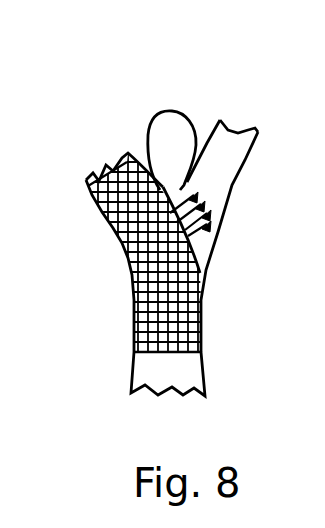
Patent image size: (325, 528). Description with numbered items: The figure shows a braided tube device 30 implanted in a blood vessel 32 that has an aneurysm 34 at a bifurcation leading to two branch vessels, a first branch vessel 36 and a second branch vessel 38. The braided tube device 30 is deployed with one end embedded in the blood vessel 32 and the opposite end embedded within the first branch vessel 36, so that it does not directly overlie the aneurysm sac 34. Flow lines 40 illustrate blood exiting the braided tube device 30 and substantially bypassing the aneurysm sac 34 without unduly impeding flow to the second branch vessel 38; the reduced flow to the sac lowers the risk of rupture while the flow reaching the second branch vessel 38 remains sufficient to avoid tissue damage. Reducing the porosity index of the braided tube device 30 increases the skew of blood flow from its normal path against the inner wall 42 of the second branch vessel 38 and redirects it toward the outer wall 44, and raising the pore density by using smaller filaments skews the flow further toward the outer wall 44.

The braided tube device 30 is at (132, 290).
The blood vessel 32 is at (203, 368).
The aneurysm 34 is at (168, 100).
The first branch vessel 36 is at (110, 157).
The second branch vessel 38 is at (235, 129).
The flow lines 40 is at (205, 242).
The inner wall 42 is at (207, 137).
The outer wall 44 is at (236, 184).